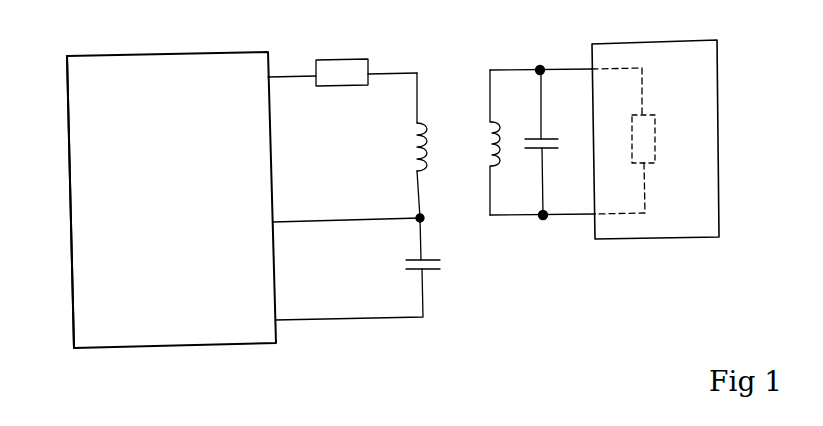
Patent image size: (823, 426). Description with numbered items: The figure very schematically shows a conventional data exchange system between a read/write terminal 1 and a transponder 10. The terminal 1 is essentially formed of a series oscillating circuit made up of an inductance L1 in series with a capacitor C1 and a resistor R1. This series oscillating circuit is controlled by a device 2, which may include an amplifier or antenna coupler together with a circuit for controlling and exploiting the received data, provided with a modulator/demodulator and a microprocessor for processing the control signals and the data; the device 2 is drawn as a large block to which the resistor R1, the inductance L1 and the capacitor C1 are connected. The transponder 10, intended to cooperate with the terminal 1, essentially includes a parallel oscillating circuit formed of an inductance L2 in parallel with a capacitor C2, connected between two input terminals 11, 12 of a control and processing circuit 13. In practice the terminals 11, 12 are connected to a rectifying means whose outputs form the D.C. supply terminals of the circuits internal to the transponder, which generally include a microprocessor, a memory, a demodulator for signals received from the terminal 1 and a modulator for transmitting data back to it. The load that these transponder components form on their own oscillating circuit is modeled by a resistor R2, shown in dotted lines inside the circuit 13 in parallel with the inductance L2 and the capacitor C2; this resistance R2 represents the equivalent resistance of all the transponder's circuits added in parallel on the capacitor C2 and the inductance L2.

The read/write terminal 1 is at (112, 361).
The device 2 is at (73, 272).
The transponder 10 is at (668, 250).
The input terminal 11 is at (541, 67).
The input terminal 12 is at (545, 219).
The control and processing circuit 13 is at (719, 193).
The resistor R1 is at (342, 60).
The inductance L1 is at (399, 145).
The capacitor C1 is at (356, 267).
The inductance L2 is at (503, 142).
The capacitor C2 is at (550, 142).
The resistor R2 is at (636, 141).